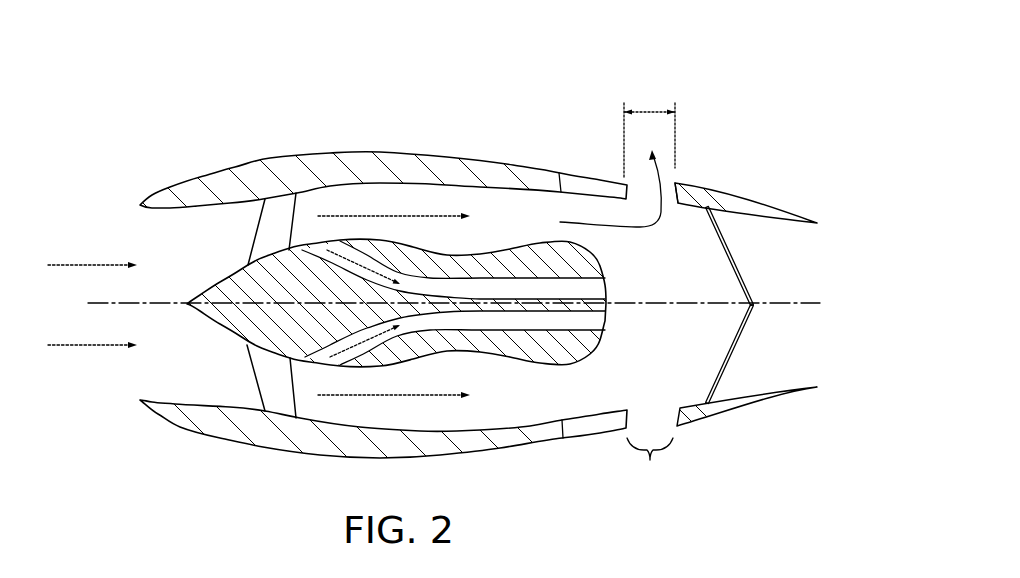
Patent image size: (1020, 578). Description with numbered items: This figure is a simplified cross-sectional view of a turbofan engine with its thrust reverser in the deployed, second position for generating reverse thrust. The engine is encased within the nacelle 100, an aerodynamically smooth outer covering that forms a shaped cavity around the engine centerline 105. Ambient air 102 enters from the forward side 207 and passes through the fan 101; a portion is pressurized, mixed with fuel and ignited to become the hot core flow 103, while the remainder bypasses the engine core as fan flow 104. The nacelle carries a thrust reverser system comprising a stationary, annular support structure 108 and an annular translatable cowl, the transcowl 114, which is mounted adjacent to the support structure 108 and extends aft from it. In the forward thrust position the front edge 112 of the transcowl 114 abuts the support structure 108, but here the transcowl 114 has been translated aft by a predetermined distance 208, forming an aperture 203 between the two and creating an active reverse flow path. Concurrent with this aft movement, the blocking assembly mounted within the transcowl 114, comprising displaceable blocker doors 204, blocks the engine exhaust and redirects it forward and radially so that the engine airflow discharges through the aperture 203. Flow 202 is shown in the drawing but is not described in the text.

The nacelle 100 is at (458, 105).
The fan 101 is at (277, 202).
The ambient air 102 is at (88, 263).
The core flow 103 is at (372, 267).
The fan flow 104 is at (402, 214).
The engine centerline 105 is at (805, 302).
The support structure 108 is at (600, 178).
The front edge 112 is at (676, 183).
The transcowl 114 is at (760, 203).
The exhaust flow 202 is at (647, 229).
The aperture 203 is at (650, 466).
The blocker doors 204 is at (734, 262).
The forward side 207 is at (136, 222).
The predetermined distance 208 is at (651, 107).